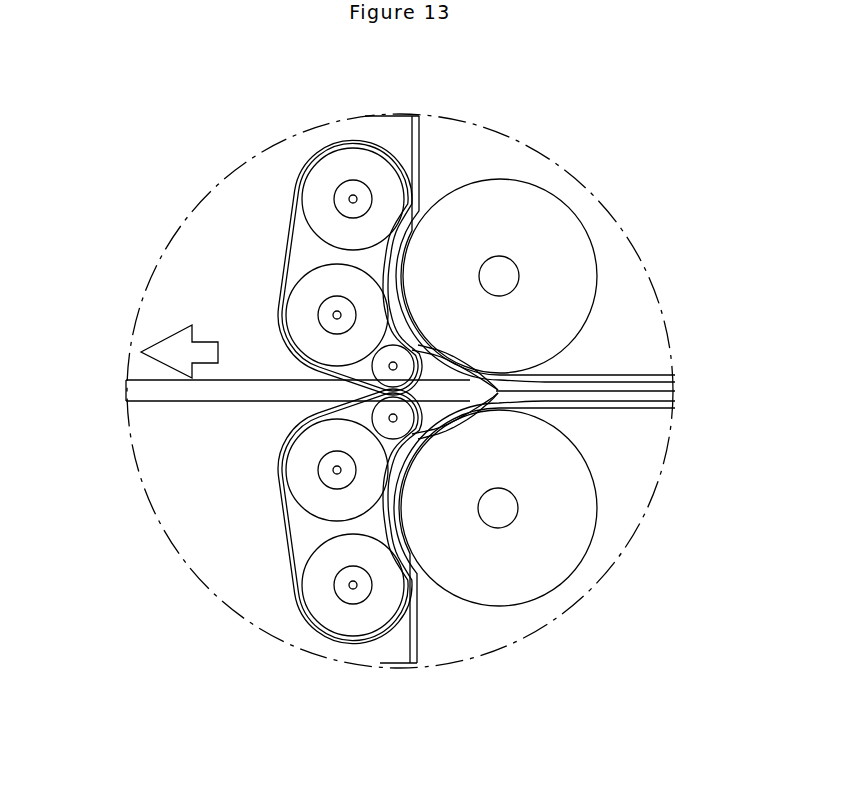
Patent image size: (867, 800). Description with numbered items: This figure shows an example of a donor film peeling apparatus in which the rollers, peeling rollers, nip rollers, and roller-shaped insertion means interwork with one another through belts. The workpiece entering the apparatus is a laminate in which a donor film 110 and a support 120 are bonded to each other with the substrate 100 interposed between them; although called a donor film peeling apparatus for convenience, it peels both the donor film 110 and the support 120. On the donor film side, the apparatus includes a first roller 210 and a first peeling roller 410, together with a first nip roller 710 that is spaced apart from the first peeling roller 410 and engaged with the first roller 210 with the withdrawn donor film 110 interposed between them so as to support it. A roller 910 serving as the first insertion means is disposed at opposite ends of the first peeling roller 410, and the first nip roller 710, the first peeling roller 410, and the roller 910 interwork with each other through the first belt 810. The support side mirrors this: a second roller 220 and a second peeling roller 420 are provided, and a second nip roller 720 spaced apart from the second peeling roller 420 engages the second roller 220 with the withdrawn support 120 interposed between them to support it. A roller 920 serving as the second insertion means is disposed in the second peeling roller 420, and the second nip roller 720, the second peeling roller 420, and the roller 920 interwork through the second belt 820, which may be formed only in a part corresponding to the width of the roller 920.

The substrate 100 is at (135, 392).
The donor film 110 is at (420, 138).
The support 120 is at (643, 410).
The first roller 210 is at (537, 207).
The second roller 220 is at (535, 575).
The first peeling roller 410 is at (300, 307).
The second peeling roller 420 is at (300, 477).
The first nip roller 710 is at (345, 166).
The second nip roller 720 is at (343, 617).
The first belt 810 is at (290, 226).
The second belt 820 is at (290, 558).
The roller serving as first insertion means 910 is at (402, 350).
The roller serving as second insertion means 920 is at (413, 438).